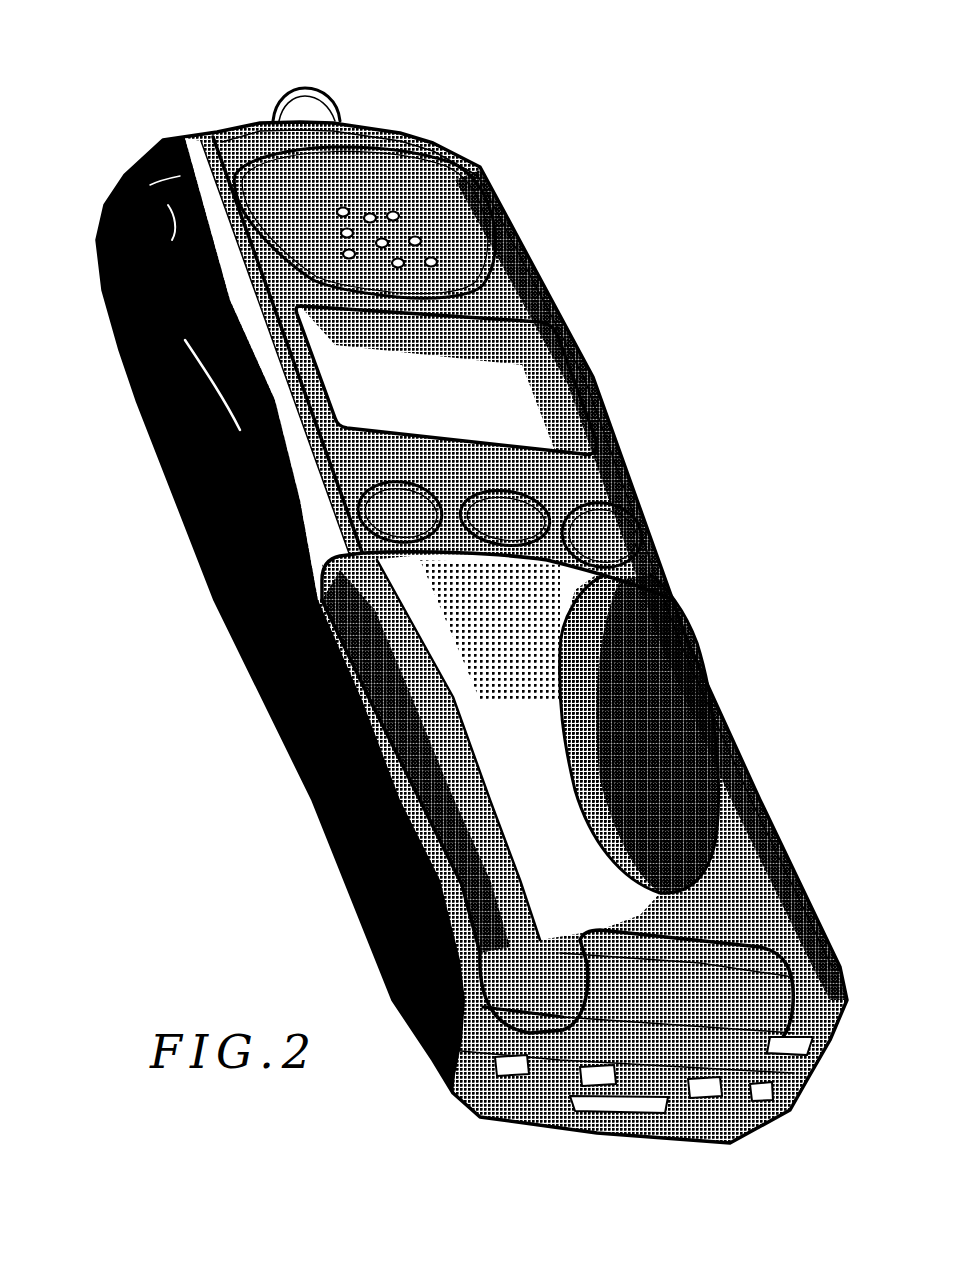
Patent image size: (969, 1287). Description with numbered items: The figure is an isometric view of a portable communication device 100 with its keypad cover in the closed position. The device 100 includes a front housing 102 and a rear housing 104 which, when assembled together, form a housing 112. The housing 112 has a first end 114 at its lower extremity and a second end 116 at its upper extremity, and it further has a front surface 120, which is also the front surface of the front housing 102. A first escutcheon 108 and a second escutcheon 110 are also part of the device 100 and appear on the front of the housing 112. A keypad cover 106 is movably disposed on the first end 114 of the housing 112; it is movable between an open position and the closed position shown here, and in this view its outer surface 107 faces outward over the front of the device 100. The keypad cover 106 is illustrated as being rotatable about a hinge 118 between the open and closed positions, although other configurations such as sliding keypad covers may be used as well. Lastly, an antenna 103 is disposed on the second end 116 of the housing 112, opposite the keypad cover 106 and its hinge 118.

The portable communication device 100 is at (757, 219).
The front housing 102 is at (127, 195).
The antenna 103 is at (318, 98).
The rear housing 104 is at (98, 230).
The keypad cover 106 is at (765, 860).
The outer surface 107 is at (740, 822).
The first escutcheon 108 is at (607, 478).
The second escutcheon 110 is at (642, 675).
The housing 112 is at (755, 1130).
The first end 114 is at (848, 972).
The second end 116 is at (521, 183).
The hinge 118 is at (847, 1010).
The front surface 120 is at (212, 148).